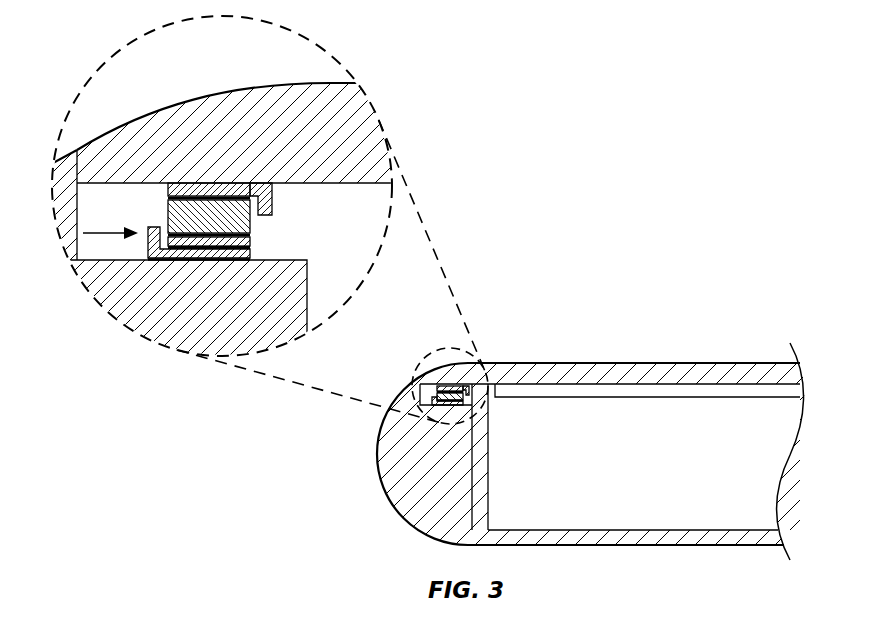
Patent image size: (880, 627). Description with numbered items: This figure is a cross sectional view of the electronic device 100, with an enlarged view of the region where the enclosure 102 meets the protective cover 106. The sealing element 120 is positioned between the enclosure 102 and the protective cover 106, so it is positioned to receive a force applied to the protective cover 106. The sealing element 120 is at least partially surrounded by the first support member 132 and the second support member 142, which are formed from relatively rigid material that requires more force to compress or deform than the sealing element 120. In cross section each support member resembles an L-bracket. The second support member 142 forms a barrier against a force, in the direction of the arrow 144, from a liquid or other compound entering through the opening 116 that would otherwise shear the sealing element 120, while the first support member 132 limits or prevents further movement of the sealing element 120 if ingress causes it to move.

The electronic device 100 is at (677, 272).
The enclosure 102 is at (173, 315).
The protective cover 106 is at (238, 133).
The opening 116 is at (90, 130).
The sealing element 120 is at (250, 231).
The first support member 132 is at (273, 198).
The second support member 142 is at (138, 252).
The arrow 144 is at (78, 262).